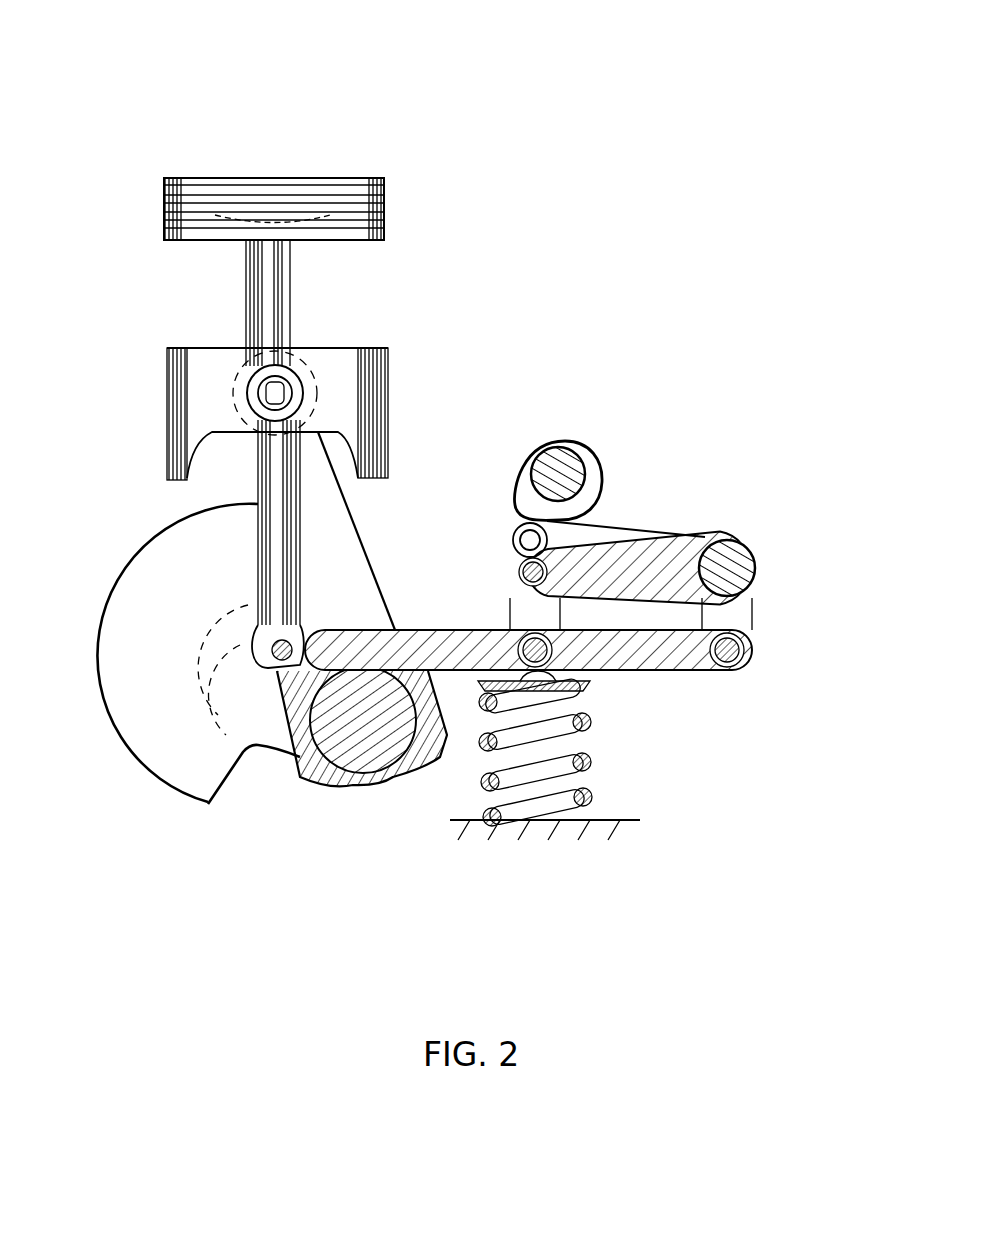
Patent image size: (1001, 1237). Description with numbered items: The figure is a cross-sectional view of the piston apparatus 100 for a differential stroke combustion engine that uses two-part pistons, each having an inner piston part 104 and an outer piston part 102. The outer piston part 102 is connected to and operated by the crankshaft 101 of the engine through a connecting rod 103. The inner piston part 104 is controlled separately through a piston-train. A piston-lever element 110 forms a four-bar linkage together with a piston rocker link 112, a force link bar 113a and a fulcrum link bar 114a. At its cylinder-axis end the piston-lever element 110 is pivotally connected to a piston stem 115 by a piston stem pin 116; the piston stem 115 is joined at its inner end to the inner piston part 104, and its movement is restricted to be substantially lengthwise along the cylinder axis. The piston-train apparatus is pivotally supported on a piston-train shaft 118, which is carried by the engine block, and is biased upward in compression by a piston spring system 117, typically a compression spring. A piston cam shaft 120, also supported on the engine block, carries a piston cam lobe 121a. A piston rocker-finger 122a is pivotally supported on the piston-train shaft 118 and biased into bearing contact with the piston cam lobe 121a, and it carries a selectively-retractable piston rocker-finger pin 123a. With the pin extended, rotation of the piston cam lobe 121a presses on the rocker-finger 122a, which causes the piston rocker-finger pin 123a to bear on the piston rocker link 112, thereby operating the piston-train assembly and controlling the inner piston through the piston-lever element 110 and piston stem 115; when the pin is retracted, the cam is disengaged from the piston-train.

The piston apparatus 100 is at (201, 43).
The crankshaft 101 is at (110, 712).
The outer piston part 102 is at (360, 363).
The connecting rod 103 is at (356, 584).
The inner piston part 104 is at (258, 178).
The piston-lever element 110 is at (632, 672).
The piston rocker link 112 is at (648, 548).
The force link bar 113a is at (527, 607).
The fulcrum link bar 114a is at (745, 607).
The piston stem 115 is at (291, 285).
The piston stem pin 116 is at (278, 662).
The piston spring system 117 is at (600, 792).
The piston-train shaft 118 is at (728, 556).
The piston cam shaft 120 is at (509, 458).
The piston cam lobe 121a is at (525, 492).
The piston rocker-finger 122a is at (604, 522).
The piston rocker-finger pin 123a is at (523, 536).